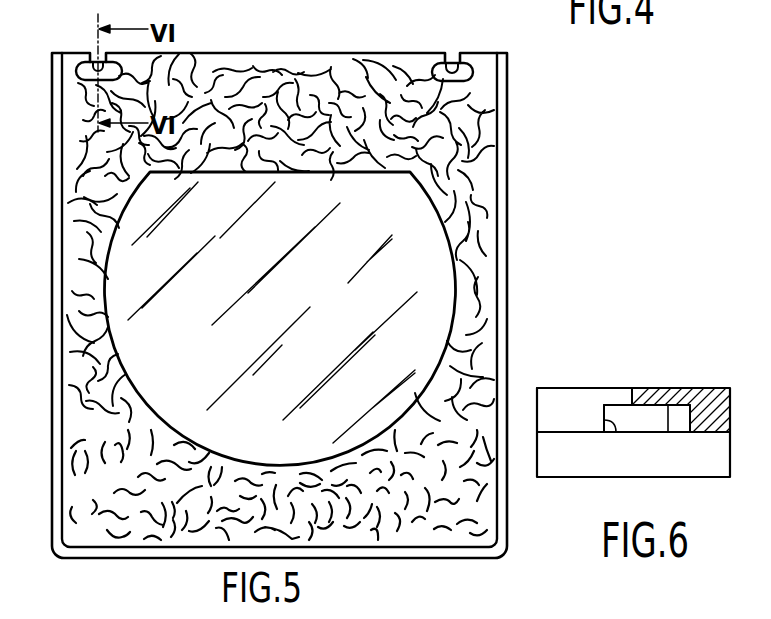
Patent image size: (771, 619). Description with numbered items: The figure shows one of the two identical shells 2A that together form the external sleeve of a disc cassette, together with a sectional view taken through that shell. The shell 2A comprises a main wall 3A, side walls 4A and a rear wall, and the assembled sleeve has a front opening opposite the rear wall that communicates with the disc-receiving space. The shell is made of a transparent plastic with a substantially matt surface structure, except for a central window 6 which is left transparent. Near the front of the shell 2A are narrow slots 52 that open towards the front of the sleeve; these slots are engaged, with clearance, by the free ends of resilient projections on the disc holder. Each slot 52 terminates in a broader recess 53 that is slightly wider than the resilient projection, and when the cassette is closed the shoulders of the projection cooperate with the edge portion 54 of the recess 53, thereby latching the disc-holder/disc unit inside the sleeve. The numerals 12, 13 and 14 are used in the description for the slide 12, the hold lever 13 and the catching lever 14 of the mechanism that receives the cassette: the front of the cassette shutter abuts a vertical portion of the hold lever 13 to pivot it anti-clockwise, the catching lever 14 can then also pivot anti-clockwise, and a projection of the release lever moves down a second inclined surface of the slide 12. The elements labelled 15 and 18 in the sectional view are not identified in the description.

In FIG. 5, the shell 2A is at (507, 252).
In FIG. 5, the side walls 4A is at (500, 210).
In FIG. 5, the narrow slots 52 is at (454, 60).
In FIG. 5, the broader recesses 53 is at (518, 72).
In FIG. 5, the edge portion 54 is at (432, 72).
In FIG. 5, the central window 6 is at (445, 286).
In FIG. 5, the main wall 3A is at (485, 325).
In FIG. 6, the main wall 3A is at (708, 400).
In FIG. 5, the lining material 18 is at (487, 382).
In FIG. 6, the outer frame layer 15 is at (573, 402).
In FIG. 6, the slide 12 is at (646, 412).
In FIG. 6, the hold lever 13 is at (616, 432).
In FIG. 6, the catching lever 14 is at (668, 432).